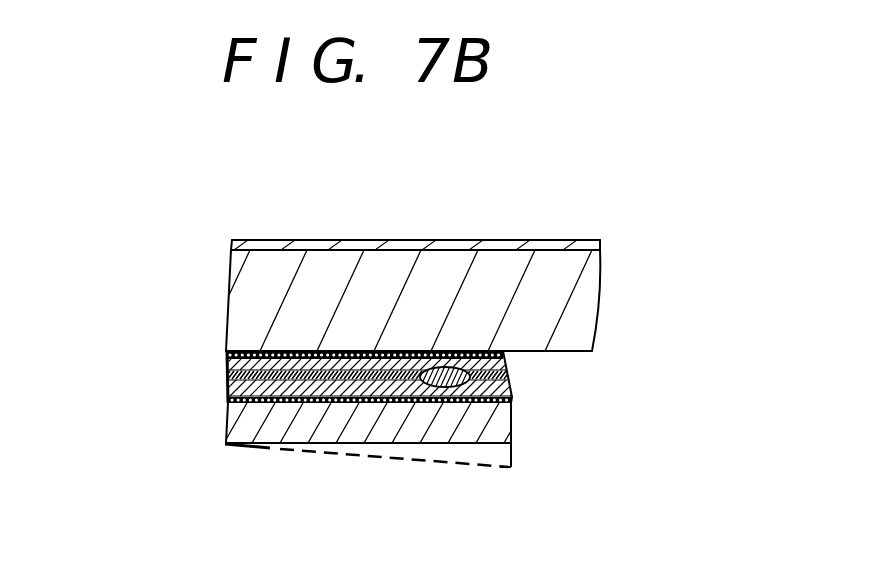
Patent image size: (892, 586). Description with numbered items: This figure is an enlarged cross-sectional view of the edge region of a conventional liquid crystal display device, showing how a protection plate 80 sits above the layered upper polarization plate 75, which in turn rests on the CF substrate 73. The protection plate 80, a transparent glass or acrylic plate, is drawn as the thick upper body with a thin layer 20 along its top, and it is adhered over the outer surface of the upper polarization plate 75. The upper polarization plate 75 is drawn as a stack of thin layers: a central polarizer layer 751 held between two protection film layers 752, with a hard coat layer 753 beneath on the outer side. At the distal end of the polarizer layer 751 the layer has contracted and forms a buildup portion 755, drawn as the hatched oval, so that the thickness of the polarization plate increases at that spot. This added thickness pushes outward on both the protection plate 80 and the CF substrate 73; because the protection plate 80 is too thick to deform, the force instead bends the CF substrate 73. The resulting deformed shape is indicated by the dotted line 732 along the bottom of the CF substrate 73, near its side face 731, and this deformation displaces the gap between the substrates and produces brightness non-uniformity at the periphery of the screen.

The substrate 20 is at (345, 351).
The protection plate 80 is at (580, 249).
The upper polarization plate 75 is at (104, 338).
The protection film layer 752 is at (228, 368).
The polarizer layer 751 is at (229, 383).
The hard coat layer 753 is at (229, 408).
The CF substrate 73 is at (246, 437).
The side face 731 is at (513, 418).
The dotted line 732 is at (508, 468).
The buildup portion 755 is at (440, 390).